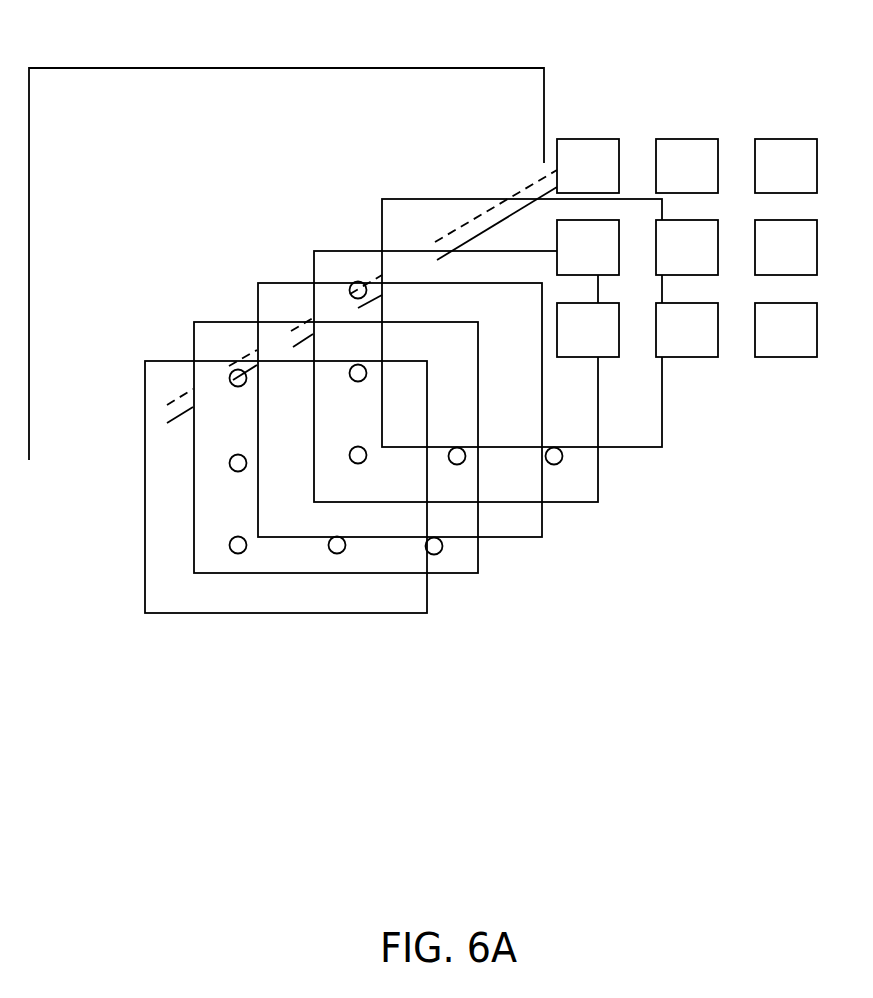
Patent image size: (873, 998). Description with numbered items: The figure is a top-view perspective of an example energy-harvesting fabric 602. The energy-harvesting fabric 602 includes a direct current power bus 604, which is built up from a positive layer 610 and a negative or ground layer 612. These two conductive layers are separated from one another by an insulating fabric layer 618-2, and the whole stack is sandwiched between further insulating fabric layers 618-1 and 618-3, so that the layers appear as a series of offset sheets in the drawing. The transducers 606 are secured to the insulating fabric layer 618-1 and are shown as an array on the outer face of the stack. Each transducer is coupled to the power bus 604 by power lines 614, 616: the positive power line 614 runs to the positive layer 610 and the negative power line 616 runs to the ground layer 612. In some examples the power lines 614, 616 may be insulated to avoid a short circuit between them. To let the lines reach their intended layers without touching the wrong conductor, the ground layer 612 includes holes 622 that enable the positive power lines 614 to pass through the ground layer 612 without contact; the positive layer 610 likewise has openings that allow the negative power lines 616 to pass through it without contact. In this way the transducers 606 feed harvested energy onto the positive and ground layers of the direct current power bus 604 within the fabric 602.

The energy-harvesting fabric 602 is at (465, 914).
The direct current power bus 604 is at (268, 68).
The transducers 606 is at (687, 248).
The positive layer 610 is at (478, 555).
The ground layer 612 is at (598, 478).
The positive power line 614 is at (503, 218).
The negative power line 616 is at (538, 180).
The insulating fabric layer 618-1 is at (382, 213).
The insulating fabric layer 618-2 is at (287, 283).
The insulating fabric layer 618-3 is at (167, 361).
The holes 622 is at (350, 458).